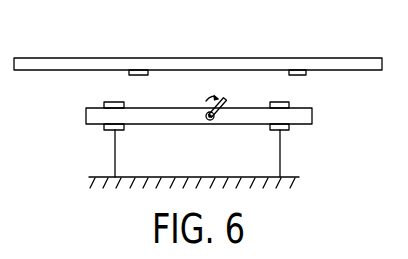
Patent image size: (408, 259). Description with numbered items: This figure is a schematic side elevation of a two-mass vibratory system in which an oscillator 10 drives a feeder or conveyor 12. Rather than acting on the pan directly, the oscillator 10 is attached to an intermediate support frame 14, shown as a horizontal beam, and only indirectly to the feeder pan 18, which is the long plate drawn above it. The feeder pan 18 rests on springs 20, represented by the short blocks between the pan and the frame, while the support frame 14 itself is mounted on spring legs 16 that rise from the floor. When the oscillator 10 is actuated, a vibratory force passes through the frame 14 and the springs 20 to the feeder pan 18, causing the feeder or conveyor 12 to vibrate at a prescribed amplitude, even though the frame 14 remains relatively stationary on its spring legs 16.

The oscillator 10 is at (225, 104).
The feeder or conveyor 12 is at (104, 143).
The intermediate support frame 14 is at (168, 113).
The spring legs 16 is at (116, 156).
The feeder pan 18 is at (277, 62).
The springs 20 is at (117, 102).